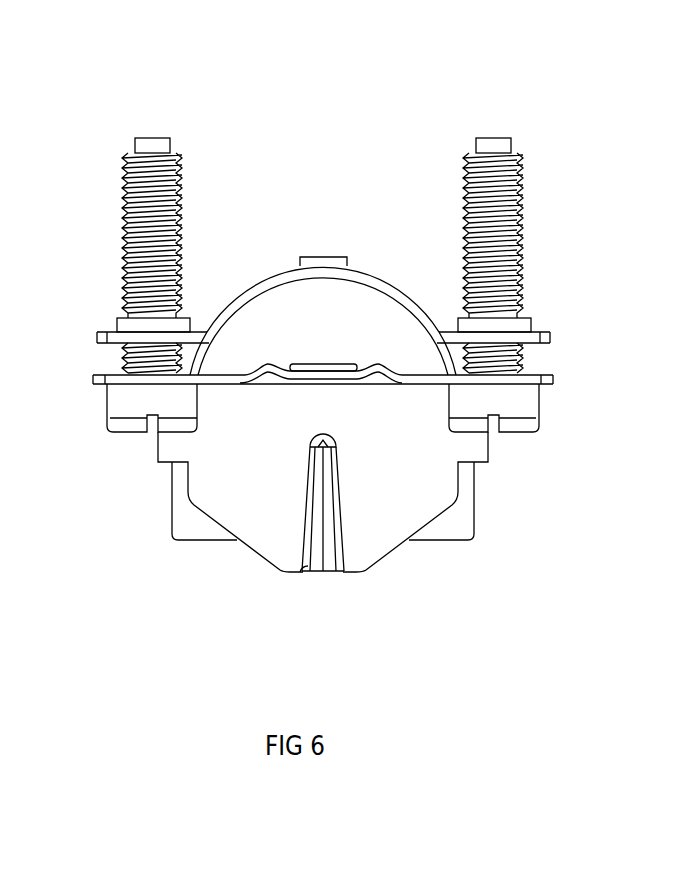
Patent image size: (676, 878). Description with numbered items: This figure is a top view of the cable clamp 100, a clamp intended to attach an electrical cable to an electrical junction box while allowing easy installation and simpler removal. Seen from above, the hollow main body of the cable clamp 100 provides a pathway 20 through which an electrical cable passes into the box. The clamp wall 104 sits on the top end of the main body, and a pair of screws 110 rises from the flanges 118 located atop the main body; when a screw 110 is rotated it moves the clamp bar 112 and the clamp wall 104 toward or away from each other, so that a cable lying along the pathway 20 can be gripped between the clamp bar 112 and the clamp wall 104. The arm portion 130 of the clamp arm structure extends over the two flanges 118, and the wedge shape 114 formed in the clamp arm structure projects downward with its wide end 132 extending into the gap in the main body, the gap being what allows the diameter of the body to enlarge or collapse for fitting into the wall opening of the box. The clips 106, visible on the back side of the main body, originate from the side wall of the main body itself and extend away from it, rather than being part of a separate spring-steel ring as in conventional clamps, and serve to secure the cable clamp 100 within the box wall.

The cable clamp 100 is at (66, 132).
The pathway 20 is at (315, 308).
The clamp wall 104 is at (283, 268).
The clips 106 is at (308, 258).
The screw 110 is at (125, 231).
The clamp bar 112 is at (345, 368).
The wedge shape 114 is at (322, 507).
The flanges 118 is at (188, 503).
The arm portion 130 is at (432, 450).
The wide end 132 is at (305, 572).